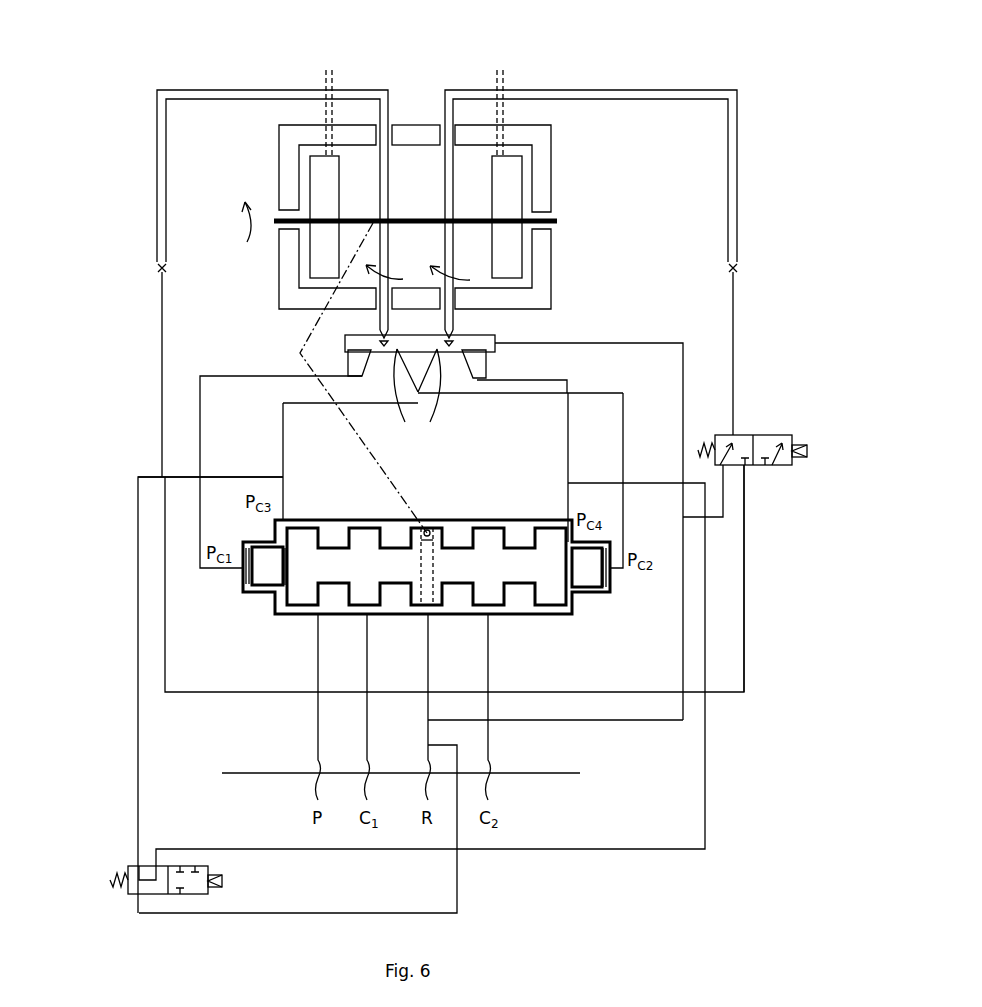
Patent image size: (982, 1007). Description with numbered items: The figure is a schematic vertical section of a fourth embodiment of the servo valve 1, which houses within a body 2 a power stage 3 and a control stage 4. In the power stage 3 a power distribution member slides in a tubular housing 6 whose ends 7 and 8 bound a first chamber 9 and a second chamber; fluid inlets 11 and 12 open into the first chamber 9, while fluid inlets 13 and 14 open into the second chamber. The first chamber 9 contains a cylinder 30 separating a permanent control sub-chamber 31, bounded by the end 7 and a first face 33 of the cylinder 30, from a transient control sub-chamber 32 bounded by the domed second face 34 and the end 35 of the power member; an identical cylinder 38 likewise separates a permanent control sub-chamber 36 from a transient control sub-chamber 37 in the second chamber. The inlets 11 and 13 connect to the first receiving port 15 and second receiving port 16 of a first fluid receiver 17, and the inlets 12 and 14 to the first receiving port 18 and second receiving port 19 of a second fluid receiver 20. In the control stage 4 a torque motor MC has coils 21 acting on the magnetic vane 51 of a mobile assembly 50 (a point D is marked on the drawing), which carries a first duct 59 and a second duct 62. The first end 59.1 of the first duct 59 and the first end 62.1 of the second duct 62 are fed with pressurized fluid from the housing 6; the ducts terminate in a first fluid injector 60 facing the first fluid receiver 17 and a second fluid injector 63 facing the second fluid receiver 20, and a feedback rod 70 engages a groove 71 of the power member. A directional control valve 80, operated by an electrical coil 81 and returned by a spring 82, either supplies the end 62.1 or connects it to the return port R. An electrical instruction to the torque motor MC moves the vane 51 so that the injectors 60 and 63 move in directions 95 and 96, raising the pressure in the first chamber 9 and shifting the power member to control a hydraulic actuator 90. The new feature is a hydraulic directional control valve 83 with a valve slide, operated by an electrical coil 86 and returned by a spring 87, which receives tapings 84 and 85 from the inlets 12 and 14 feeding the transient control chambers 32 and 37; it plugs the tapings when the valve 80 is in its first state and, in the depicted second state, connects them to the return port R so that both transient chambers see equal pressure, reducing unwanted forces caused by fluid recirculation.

The servo valve 1 is at (771, 68).
The body 2 is at (760, 222).
The power stage 3 is at (124, 460).
The control stage 4 is at (124, 188).
The tubular housing 6 is at (585, 693).
The end of the tubular housing 7 is at (245, 578).
The end of the tubular housing 8 is at (608, 582).
The first chamber 9 is at (453, 575).
The fluid inlet 11 is at (200, 437).
The fluid inlet 12 is at (283, 441).
The fluid inlet 13 is at (623, 440).
The fluid inlet 14 is at (568, 443).
The first receiving port 15 is at (361, 372).
The second receiving port 16 is at (402, 398).
The first fluid receiver 17 is at (369, 350).
The first receiving port 18 is at (431, 398).
The second receiving port 19 is at (480, 366).
The second fluid receiver 20 is at (498, 348).
The coils 21 is at (318, 157).
The cylinder 30 is at (262, 582).
The permanent control sub-chamber 31 is at (246, 592).
The transient control sub-chamber 32 is at (279, 535).
The first face of the cylinder 33 is at (241, 548).
The second face of the cylinder 34 is at (290, 566).
The end of the power distribution member 35 is at (290, 567).
The permanent control sub-chamber 36 is at (607, 590).
The transient control sub-chamber 37 is at (565, 617).
The cylinder 38 is at (588, 585).
The mobile assembly 50 is at (438, 190).
The magnetic vane 51 is at (557, 220).
The first duct 59 is at (389, 93).
The first end of the first duct 59.1 is at (160, 265).
The first fluid injector 60 is at (378, 334).
The second duct 62 is at (444, 96).
The first end of the second duct 62.1 is at (731, 264).
The second fluid injector 63 is at (455, 334).
The feedback rod 70 is at (347, 433).
The groove 71 is at (441, 518).
The directional control valve 80 is at (761, 436).
The electrical coil 81 is at (804, 446).
The spring 82 is at (707, 442).
The hydraulic directional control valve 83 is at (133, 864).
The taping 84 is at (139, 735).
The taping 85 is at (567, 851).
The electrical coil 86 is at (214, 888).
The spring 87 is at (120, 888).
The hydraulic actuator 90 is at (225, 222).
The direction 95 is at (391, 266).
The direction 96 is at (456, 267).
The pivot point D is at (433, 526).
The torque motor MC is at (550, 152).